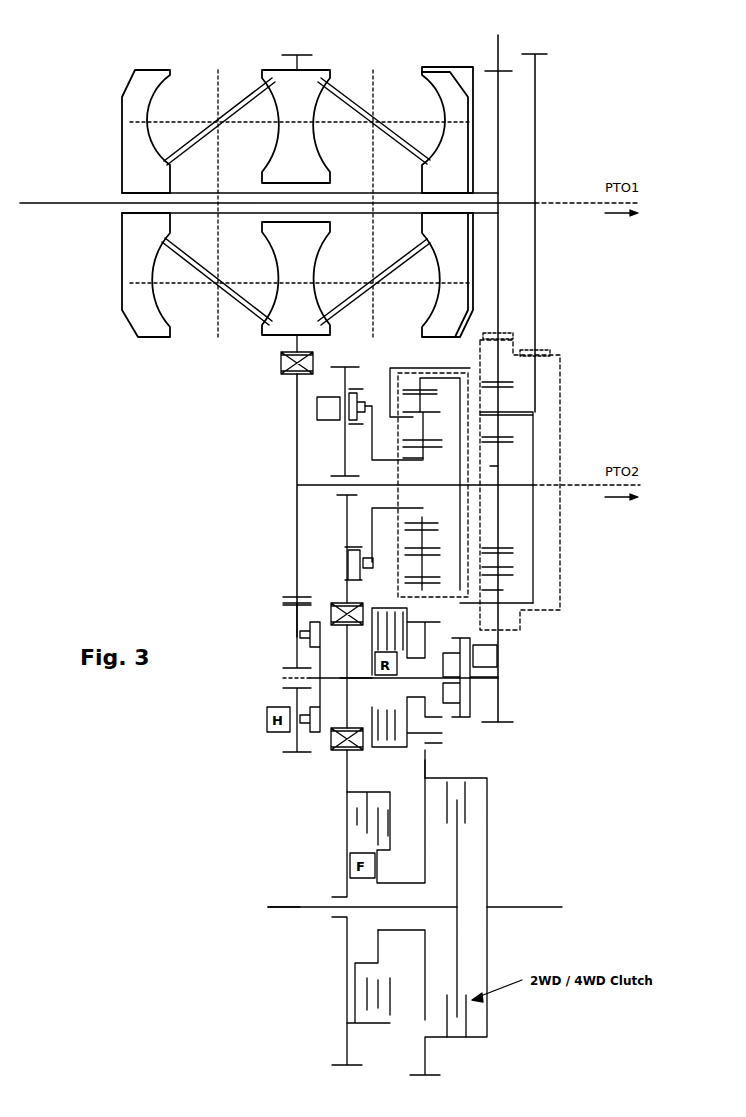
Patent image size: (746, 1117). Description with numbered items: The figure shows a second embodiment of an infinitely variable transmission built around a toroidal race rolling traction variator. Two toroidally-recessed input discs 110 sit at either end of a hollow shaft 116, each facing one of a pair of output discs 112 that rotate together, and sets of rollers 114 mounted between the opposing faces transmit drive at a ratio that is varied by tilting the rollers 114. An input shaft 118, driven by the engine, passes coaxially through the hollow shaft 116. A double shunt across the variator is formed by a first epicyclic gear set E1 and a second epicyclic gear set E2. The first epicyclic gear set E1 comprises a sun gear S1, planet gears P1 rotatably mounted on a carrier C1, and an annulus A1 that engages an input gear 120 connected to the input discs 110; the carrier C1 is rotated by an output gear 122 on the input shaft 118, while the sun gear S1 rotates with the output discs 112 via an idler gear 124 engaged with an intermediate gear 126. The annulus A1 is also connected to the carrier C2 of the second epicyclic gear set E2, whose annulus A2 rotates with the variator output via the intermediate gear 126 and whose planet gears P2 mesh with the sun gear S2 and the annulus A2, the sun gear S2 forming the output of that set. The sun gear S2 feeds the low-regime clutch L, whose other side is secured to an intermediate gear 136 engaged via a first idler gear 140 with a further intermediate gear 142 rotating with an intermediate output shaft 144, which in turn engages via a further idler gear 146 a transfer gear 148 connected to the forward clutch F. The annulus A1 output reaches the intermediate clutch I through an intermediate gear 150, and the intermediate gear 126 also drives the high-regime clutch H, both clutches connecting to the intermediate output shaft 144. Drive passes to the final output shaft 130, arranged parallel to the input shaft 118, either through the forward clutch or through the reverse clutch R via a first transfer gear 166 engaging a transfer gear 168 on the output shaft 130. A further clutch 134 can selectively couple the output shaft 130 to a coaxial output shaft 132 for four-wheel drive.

The input discs 110 is at (170, 68).
The output discs 112 is at (277, 75).
The rollers 114 is at (255, 90).
The hollow shaft 116 is at (245, 193).
The input shaft 118 is at (68, 203).
The input gear 120 is at (498, 365).
The output gear 122 is at (535, 97).
The idler gear 124 is at (281, 362).
The intermediate gear 126 is at (297, 507).
The final output shaft 130 is at (535, 907).
The coaxial output shaft 132 is at (298, 906).
The further clutch 134 is at (495, 800).
The intermediate gear 136 is at (345, 382).
The first idler gear 140 is at (335, 603).
The further intermediate gear 142 is at (352, 628).
The intermediate output shaft 144 is at (357, 680).
The further idler gear 146 is at (363, 745).
The transfer gear 148 is at (345, 775).
The intermediate gear 150 is at (498, 693).
The first transfer gear 166 is at (425, 732).
The transfer gear 168 is at (425, 760).
The annulus A1 is at (503, 357).
The annulus A2 is at (450, 377).
The carrier C1 is at (533, 422).
The carrier C2 is at (388, 380).
The first epicyclic gear set E1 is at (564, 394).
The second epicyclic gear set E2 is at (428, 370).
The planet gears P1 is at (505, 397).
The planet gears P2 is at (426, 430).
The sun gear S1 is at (498, 466).
The sun gear S2 is at (426, 460).